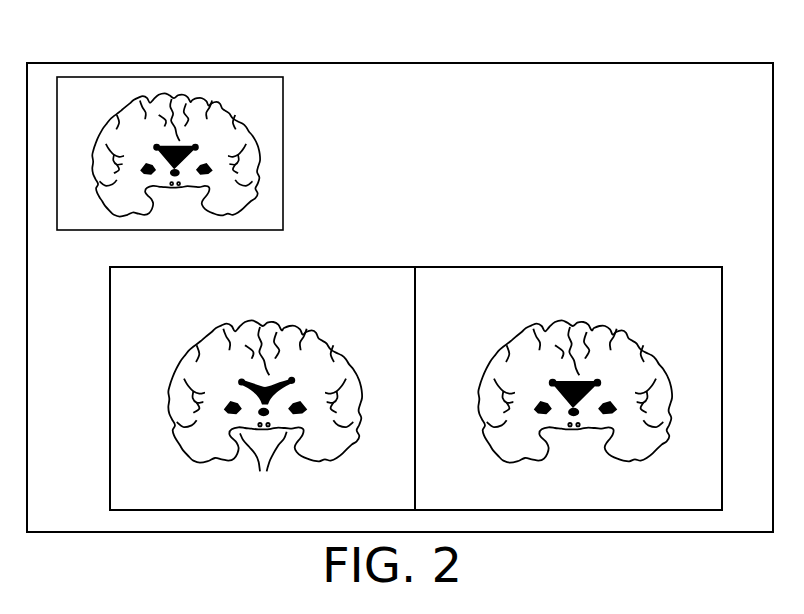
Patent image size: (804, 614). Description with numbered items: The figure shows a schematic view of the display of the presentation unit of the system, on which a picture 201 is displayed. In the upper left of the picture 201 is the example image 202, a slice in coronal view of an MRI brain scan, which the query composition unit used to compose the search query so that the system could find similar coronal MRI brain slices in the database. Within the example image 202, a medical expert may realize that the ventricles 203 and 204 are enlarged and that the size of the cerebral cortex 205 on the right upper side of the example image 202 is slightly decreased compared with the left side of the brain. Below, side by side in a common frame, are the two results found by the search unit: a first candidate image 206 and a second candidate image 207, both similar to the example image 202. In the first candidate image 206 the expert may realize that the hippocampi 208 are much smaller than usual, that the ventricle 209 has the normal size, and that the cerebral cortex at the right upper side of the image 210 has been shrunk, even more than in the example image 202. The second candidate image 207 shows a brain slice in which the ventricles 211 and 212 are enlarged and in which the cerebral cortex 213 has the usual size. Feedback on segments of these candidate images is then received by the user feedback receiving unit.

The picture 201 is at (743, 122).
The example image 202 is at (72, 77).
The ventricle 203 is at (173, 183).
The ventricle 204 is at (167, 143).
The cerebral cortex 205 is at (237, 117).
The first candidate image 206 is at (355, 267).
The second candidate image 207 is at (662, 267).
The hippocampus 208 is at (263, 471).
The ventricle 209 is at (250, 377).
The brain image in second region 210 is at (320, 350).
The ventricle 211 is at (563, 377).
The ventricle 212 is at (575, 427).
The cerebral cortex 213 is at (650, 353).